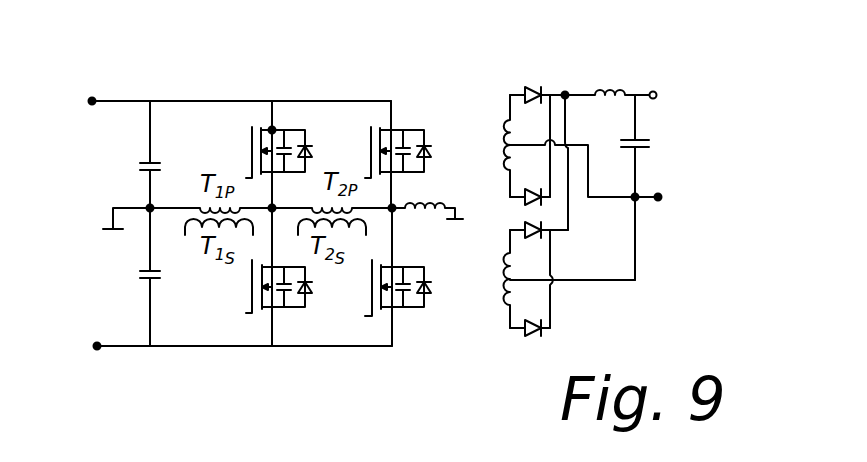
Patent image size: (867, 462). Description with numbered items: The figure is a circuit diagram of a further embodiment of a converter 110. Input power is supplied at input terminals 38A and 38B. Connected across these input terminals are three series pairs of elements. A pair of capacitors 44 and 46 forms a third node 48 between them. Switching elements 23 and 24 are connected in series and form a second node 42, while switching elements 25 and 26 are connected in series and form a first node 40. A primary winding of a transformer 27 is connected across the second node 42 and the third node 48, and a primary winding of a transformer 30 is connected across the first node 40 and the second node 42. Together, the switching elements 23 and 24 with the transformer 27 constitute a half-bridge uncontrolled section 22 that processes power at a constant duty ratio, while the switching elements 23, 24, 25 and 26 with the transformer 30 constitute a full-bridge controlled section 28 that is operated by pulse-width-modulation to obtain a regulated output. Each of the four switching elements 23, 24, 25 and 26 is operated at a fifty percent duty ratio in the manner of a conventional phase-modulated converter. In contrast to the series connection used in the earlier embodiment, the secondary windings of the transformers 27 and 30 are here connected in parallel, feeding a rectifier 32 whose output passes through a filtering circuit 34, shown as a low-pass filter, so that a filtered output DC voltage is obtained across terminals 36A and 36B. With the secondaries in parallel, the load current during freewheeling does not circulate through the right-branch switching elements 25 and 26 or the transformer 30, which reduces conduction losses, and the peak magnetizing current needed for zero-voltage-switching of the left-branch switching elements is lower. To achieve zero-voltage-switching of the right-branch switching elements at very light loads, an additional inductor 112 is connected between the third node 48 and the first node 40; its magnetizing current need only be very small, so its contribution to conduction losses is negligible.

The converter 110 is at (103, 72).
The input terminal 38A is at (92, 101).
The input terminal 38B is at (97, 346).
The half-bridge uncontrolled section 22 is at (270, 92).
The full-bridge controlled section 28 is at (392, 58).
The capacitor 44 is at (150, 162).
The capacitor 46 is at (148, 271).
The third node 48 is at (152, 212).
The transformer 27 is at (177, 208).
The transformer 30 is at (332, 184).
The second node 42 is at (275, 207).
The first node 40 is at (390, 212).
The switching element 23 is at (286, 130).
The switching element 24 is at (288, 307).
The switching element 25 is at (400, 130).
The switching element 26 is at (403, 267).
The inductor 112 is at (434, 206).
The rectifier 32 is at (571, 66).
The filtering circuit 34 is at (620, 66).
The terminal 36A is at (657, 95).
The terminal 36B is at (658, 197).